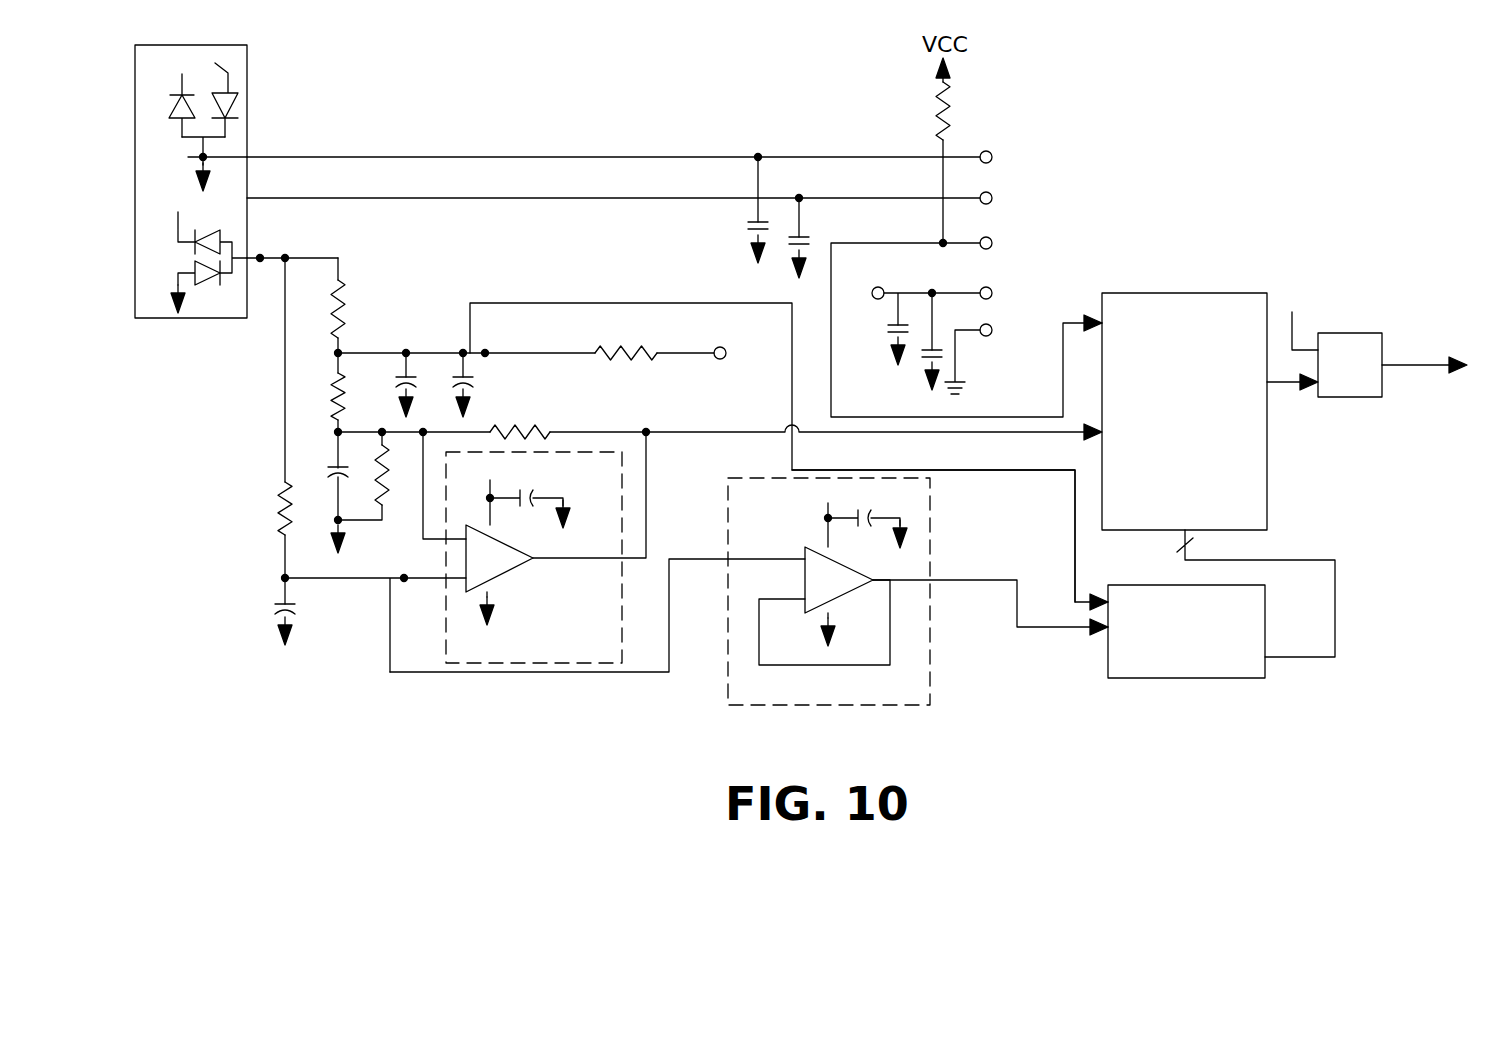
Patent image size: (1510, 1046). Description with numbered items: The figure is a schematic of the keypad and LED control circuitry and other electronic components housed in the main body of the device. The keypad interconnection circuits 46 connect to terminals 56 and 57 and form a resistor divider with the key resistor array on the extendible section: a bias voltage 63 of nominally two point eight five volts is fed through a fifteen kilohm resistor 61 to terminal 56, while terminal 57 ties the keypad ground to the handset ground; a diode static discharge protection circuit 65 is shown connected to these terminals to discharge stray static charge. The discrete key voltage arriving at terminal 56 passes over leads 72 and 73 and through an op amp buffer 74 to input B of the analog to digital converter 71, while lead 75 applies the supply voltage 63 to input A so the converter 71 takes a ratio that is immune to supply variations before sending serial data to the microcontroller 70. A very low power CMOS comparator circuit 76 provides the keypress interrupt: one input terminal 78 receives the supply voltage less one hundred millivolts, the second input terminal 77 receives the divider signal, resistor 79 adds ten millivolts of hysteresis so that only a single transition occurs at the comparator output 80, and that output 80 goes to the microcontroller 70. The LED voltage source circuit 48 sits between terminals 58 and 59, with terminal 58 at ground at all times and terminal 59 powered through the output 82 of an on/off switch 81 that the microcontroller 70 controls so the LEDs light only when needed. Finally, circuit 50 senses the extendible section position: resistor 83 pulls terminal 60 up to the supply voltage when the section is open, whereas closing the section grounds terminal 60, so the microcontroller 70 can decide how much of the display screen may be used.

The interconnection circuits 46 is at (703, 463).
The voltage source circuit 48 is at (975, 312).
The circuit 50 is at (948, 236).
The terminal 56 is at (992, 196).
The terminal 57 is at (992, 155).
The terminal 58 is at (992, 332).
The terminal 59 is at (992, 291).
The terminal 60 is at (992, 241).
The resistor 61 is at (344, 302).
The bias voltage 63 is at (720, 359).
The static discharge protection circuit 65 is at (248, 73).
The microcontroller 70 is at (1267, 485).
The analog to digital converter 71 is at (1265, 620).
The lead 72 is at (283, 432).
The lead 73 is at (615, 672).
The op amp buffer 74 is at (930, 657).
The lead 75 is at (1068, 505).
The comparator circuit 76 is at (622, 623).
The second input terminal 77 is at (424, 582).
The input terminal 78 is at (426, 545).
The resistor 79 is at (512, 432).
The output 80 is at (647, 523).
The on/off switch 81 is at (1365, 333).
The output 82 is at (872, 296).
The resistor 83 is at (950, 106).